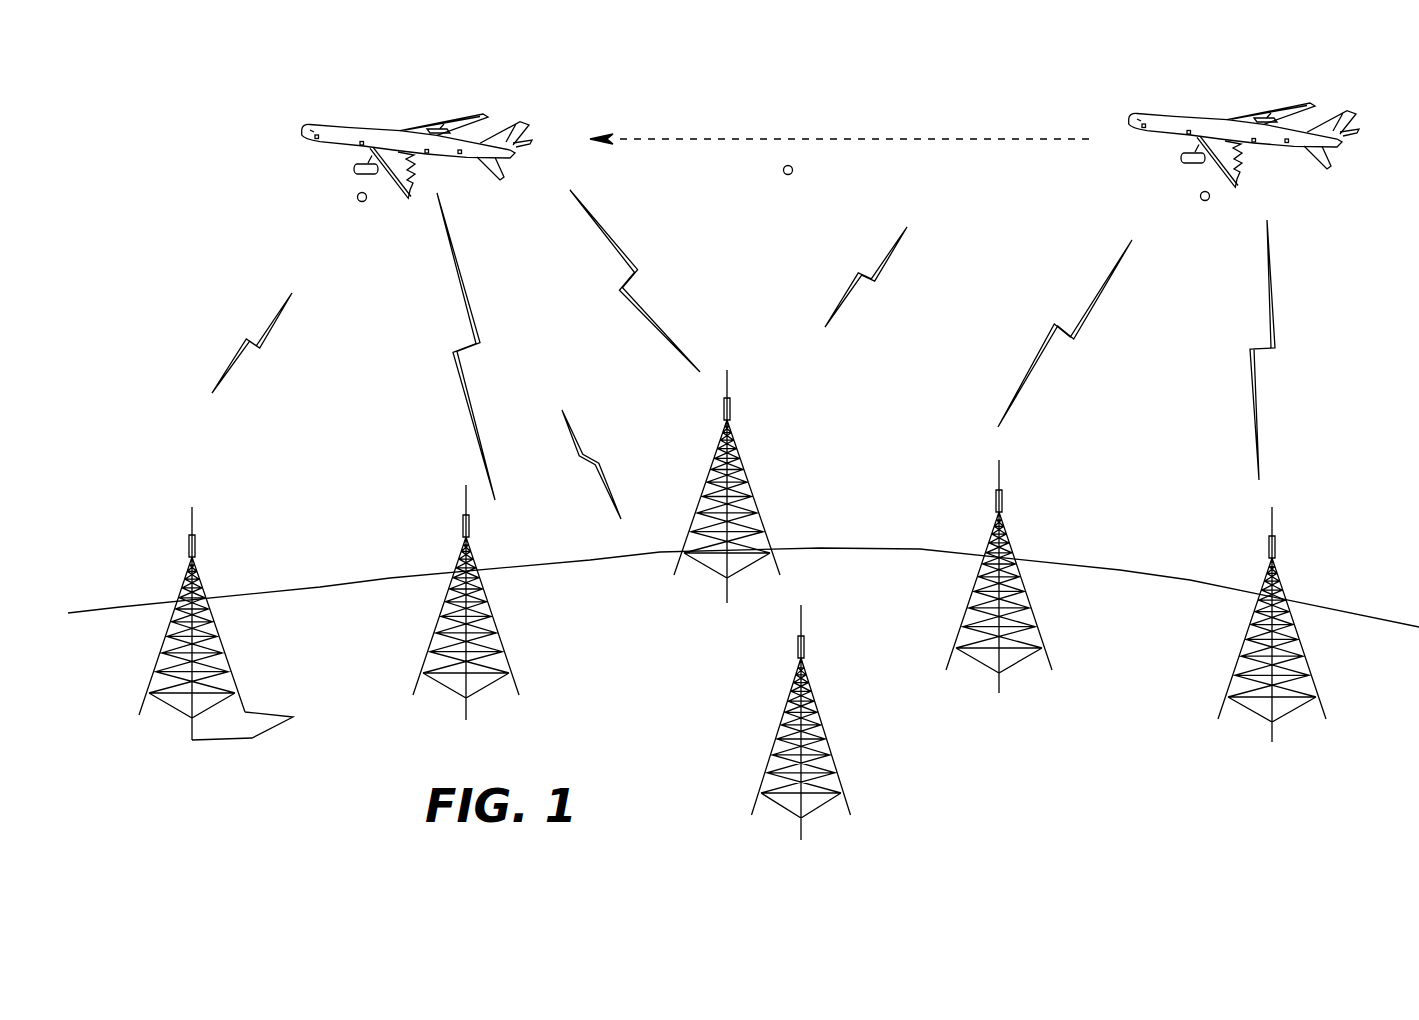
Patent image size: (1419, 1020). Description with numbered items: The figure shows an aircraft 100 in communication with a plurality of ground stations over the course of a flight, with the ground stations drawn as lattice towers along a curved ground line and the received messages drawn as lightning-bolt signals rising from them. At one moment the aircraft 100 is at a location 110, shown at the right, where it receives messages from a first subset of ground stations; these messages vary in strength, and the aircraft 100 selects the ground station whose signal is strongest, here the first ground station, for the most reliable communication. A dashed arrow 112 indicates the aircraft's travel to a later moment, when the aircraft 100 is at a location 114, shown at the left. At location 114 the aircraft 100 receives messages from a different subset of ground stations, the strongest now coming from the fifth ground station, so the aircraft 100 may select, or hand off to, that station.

The aircraft 100 is at (1160, 112).
The location 110 is at (1201, 197).
The air-to-air communication link 112 is at (784, 171).
The location 114 is at (358, 196).